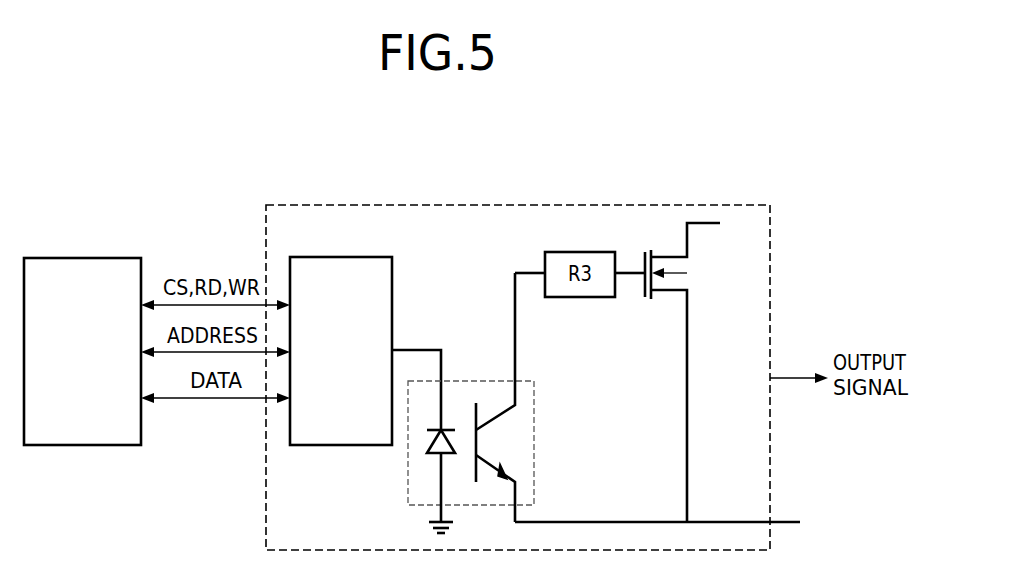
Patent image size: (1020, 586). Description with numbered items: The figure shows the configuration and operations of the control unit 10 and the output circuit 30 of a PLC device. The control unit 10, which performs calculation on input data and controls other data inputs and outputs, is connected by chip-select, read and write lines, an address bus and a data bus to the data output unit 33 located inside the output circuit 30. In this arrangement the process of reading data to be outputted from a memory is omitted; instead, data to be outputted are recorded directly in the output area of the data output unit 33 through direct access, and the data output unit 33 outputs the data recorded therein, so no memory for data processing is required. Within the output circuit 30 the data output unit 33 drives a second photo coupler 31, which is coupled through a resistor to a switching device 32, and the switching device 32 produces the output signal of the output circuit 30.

The control unit 10 is at (85, 258).
The output circuit 30 is at (534, 205).
The second photo coupler 31 is at (464, 381).
The switching device 32 is at (647, 250).
The data output unit 33 is at (341, 257).